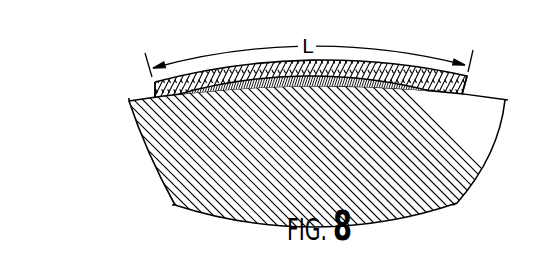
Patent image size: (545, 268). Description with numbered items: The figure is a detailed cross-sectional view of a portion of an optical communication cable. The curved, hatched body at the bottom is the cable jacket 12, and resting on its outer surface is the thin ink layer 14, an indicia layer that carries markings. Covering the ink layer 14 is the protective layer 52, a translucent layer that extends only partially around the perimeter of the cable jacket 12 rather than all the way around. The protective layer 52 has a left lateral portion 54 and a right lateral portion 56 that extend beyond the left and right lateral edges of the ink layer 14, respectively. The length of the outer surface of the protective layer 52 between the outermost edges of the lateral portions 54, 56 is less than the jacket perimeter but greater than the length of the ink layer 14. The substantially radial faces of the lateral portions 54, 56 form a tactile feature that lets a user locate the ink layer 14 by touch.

The cable jacket 12 is at (457, 170).
The ink layer 14 is at (334, 76).
The protective layer 52 is at (407, 65).
The left lateral portion 54 is at (155, 83).
The right lateral portion 56 is at (469, 96).